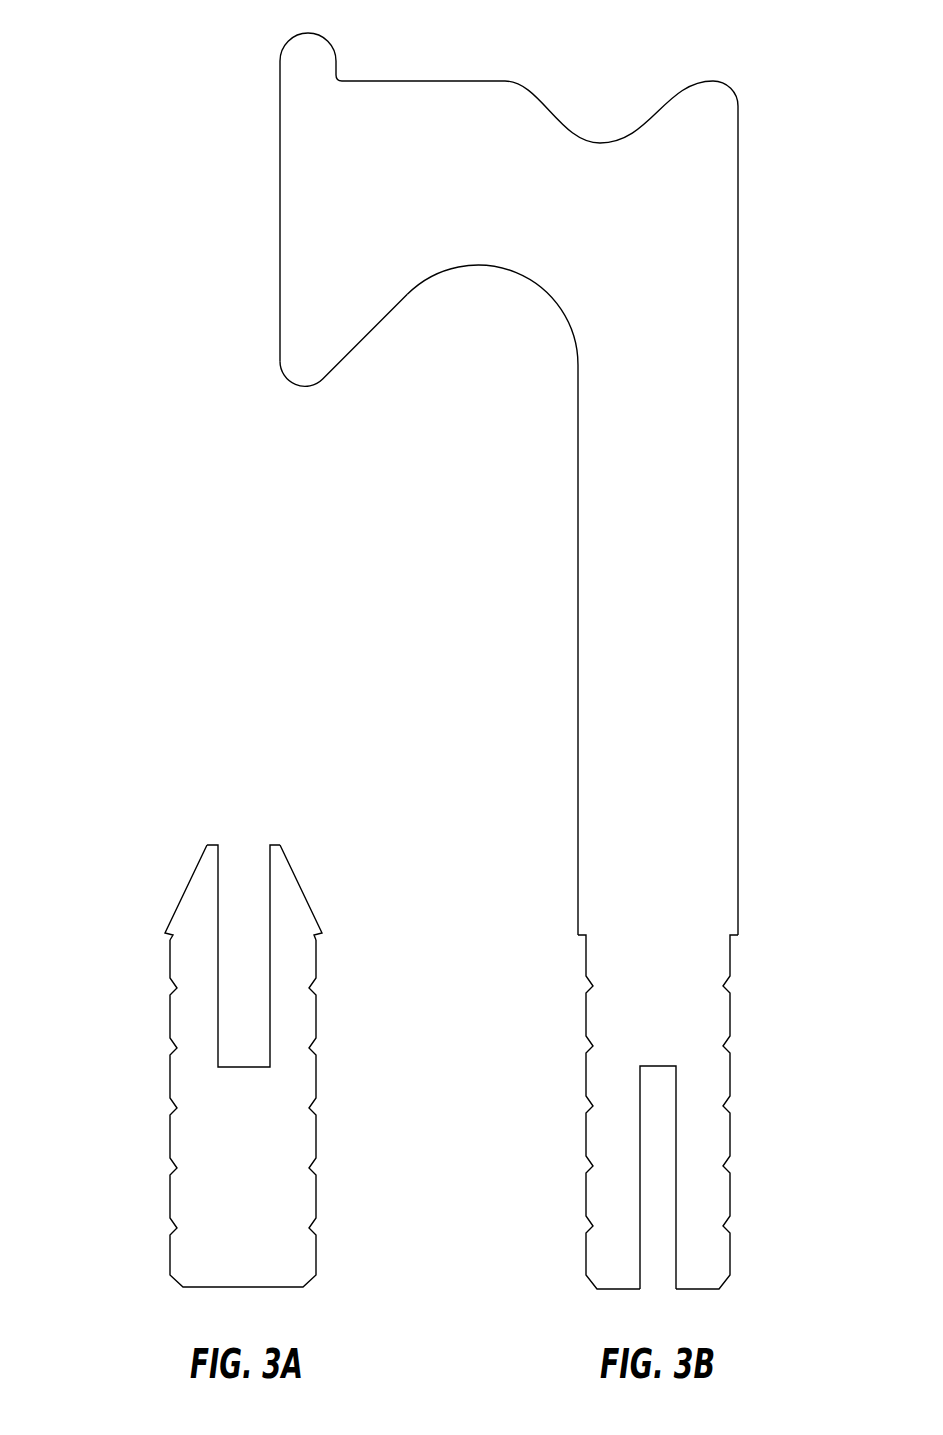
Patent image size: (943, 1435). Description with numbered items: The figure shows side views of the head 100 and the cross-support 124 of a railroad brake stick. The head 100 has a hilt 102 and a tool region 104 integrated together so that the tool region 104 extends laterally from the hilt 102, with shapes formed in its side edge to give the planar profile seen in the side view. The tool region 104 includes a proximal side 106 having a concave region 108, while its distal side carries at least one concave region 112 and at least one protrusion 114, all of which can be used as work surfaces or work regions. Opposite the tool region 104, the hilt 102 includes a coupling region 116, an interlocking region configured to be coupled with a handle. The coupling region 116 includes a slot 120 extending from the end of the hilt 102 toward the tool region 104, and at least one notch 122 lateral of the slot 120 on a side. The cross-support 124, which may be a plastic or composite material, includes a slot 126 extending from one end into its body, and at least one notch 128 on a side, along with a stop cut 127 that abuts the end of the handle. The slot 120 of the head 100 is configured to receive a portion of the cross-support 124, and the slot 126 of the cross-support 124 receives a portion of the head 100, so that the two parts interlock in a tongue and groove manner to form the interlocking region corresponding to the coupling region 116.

In FIG. 3B, the head 100 is at (85, 88).
In FIG. 3B, the hilt 102 is at (757, 520).
In FIG. 3B, the tool region 104 is at (260, 284).
In FIG. 3B, the proximal side 106 is at (334, 390).
In FIG. 3B, the concave region 108 is at (492, 297).
In FIG. 3B, the concave region 112 is at (603, 141).
In FIG. 3B, the protrusion 114 is at (308, 68).
In FIG. 3B, the coupling region 116 is at (745, 1275).
In FIG. 3B, the slot 120 is at (657, 1288).
In FIG. 3B, the notch 122 is at (585, 985).
In FIG. 3A, the cross-support 124 is at (118, 846).
In FIG. 3A, the slot 126 is at (243, 845).
In FIG. 3A, the stop cut 127 is at (165, 945).
In FIG. 3A, the notch 128 is at (172, 1047).